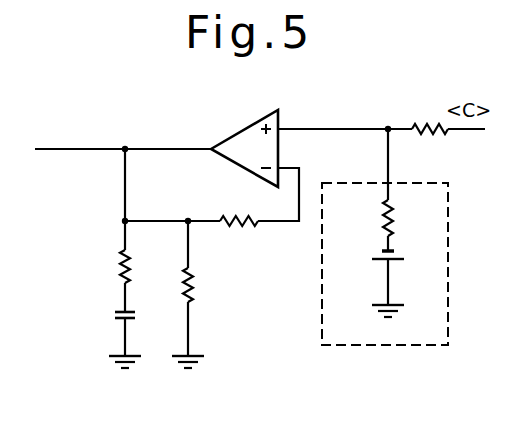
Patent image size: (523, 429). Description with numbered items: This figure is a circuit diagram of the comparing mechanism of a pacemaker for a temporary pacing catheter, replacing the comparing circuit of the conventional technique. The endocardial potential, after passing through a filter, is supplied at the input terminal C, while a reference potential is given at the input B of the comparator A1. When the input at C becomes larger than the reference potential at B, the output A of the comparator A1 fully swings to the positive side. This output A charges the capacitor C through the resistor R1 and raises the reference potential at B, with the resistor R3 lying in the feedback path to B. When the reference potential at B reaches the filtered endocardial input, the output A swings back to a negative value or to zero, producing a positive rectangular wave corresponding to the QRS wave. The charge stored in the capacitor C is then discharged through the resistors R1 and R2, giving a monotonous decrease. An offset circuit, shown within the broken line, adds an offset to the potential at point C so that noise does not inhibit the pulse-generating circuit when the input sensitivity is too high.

The output A is at (123, 135).
The comparator A1 is at (244, 148).
The resistor R1 is at (110, 252).
The resistor R2 is at (200, 288).
The resistor R3 is at (239, 235).
The capacitor C is at (115, 319).
The reference potential input B is at (286, 209).